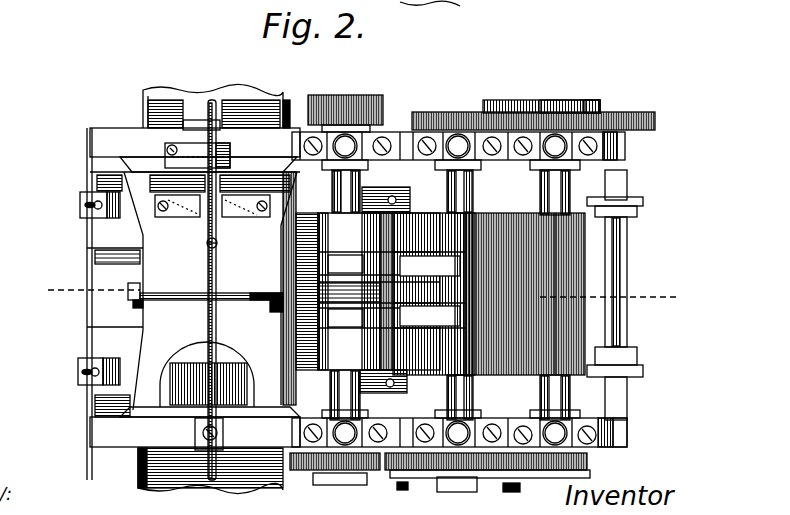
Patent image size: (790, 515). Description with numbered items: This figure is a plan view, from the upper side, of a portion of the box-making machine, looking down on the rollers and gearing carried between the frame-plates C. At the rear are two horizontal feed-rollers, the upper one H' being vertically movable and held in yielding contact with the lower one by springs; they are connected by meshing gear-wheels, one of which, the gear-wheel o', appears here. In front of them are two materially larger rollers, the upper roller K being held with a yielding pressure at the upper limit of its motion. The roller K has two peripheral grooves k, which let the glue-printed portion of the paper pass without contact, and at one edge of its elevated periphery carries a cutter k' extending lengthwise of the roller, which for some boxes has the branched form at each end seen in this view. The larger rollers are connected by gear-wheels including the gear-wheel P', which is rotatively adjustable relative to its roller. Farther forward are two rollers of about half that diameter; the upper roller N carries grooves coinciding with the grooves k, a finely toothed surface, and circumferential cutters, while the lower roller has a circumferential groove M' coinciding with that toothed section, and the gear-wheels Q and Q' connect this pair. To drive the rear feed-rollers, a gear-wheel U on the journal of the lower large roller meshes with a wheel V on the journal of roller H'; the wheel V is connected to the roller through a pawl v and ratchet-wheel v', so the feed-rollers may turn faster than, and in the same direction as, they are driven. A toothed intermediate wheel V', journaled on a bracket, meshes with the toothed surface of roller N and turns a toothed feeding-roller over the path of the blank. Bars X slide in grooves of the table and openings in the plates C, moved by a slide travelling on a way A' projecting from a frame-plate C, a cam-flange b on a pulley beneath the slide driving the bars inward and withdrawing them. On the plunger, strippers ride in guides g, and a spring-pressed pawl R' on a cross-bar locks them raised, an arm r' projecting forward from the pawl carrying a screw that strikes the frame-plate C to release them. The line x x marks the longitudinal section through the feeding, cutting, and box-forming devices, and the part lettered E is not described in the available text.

The frame-plate C is at (105, 130).
The way A' is at (210, 286).
The bar X is at (286, 105).
The carriage casting E is at (210, 291).
The arm r' is at (197, 152).
The spring-pressed pawl R' is at (241, 153).
The pawl v is at (429, 165).
The ratchet-wheel v' is at (593, 96).
The section line x is at (364, 294).
The upper roller N is at (262, 290).
The toothed intermediate wheel V' is at (262, 288).
The circumferential groove M' is at (266, 317).
The guide g is at (274, 322).
The gear-wheel Q' is at (357, 109).
The gear-wheel U is at (443, 120).
The gear-wheel V is at (570, 93).
The cam-flange b is at (450, 295).
The upper roller K is at (494, 212).
The peripheral groove k is at (430, 291).
The cutter k' is at (520, 294).
The upper feed-roller H' is at (623, 295).
The gear-wheel o' is at (461, 440).
The gear-wheel Q is at (335, 476).
The gear-wheel P' is at (487, 478).